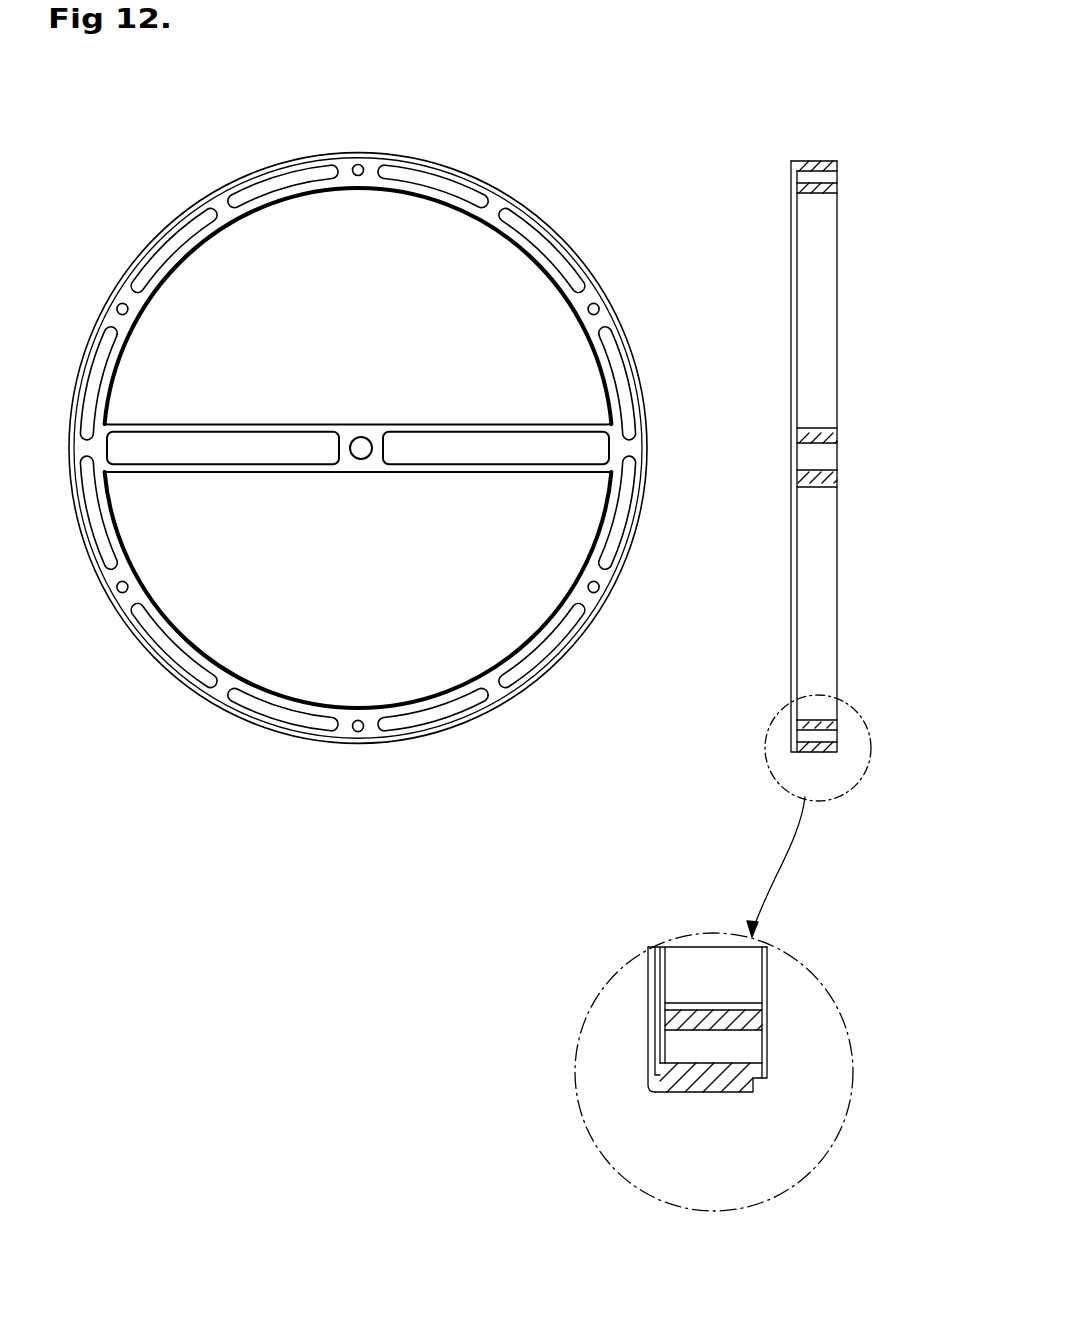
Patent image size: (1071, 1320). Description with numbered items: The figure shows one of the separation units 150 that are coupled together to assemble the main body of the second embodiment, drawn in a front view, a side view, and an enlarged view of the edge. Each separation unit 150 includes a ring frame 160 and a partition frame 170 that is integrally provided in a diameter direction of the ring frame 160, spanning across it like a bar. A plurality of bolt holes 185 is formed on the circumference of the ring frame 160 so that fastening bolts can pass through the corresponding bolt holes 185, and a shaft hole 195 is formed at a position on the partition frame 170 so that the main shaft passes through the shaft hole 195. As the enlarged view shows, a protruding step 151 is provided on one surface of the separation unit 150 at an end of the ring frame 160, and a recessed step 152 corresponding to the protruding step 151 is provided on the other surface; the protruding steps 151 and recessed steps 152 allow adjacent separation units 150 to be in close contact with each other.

The separation unit 150 is at (674, 87).
The ring frame 160 is at (218, 191).
The partition frame 170 is at (242, 440).
The bolt hole 185 is at (361, 165).
The shaft hole 195 is at (361, 446).
The protruding step 151 is at (650, 1073).
The recessed step 152 is at (762, 1093).